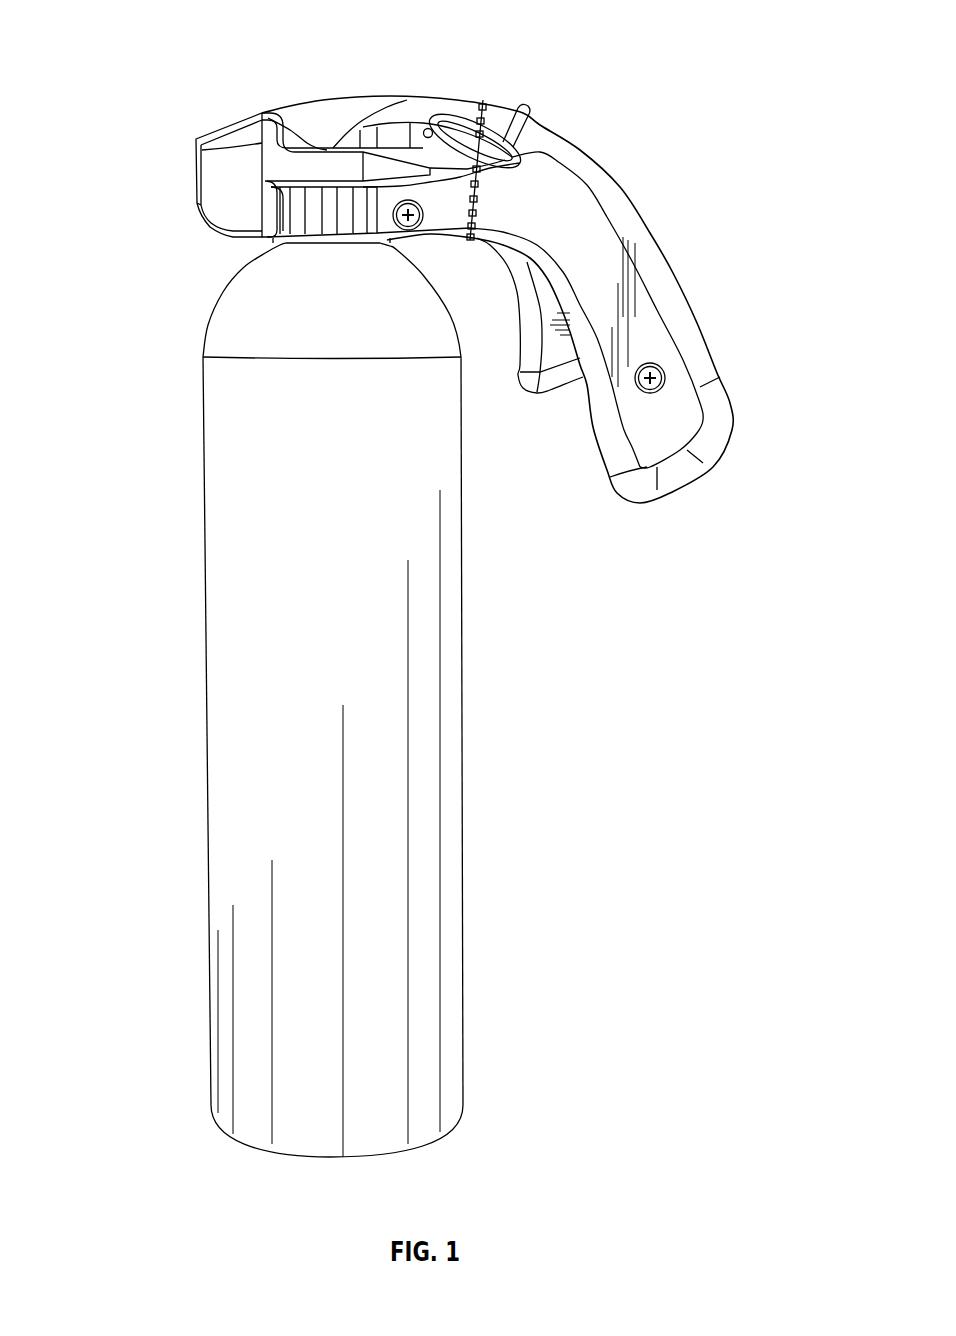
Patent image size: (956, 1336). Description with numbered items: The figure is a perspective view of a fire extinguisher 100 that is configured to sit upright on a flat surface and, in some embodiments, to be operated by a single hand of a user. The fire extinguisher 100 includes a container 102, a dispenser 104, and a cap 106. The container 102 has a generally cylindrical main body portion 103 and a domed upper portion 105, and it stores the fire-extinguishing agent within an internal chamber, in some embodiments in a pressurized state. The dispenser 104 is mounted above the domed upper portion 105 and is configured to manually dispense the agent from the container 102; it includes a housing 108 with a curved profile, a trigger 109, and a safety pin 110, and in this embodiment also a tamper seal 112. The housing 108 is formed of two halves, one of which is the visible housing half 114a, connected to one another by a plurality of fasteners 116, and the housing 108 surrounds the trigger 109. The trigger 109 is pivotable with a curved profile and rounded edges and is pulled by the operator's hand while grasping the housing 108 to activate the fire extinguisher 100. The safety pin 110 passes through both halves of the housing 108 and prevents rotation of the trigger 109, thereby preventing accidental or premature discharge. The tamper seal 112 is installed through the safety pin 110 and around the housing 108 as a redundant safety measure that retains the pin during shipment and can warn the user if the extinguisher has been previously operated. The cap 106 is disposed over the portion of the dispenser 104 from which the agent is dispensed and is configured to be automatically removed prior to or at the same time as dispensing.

The fire extinguisher 100 is at (146, 40).
The container 102 is at (180, 994).
The main body portion 103 is at (206, 866).
The dispenser 104 is at (638, 169).
The domed upper portion 105 is at (207, 300).
The cap 106 is at (178, 171).
The housing 108 is at (675, 270).
The trigger 109 is at (551, 390).
The safety pin 110 is at (530, 125).
The tamper seal 112 is at (486, 100).
The housing half 114a is at (680, 325).
The fastener 116 is at (665, 378).